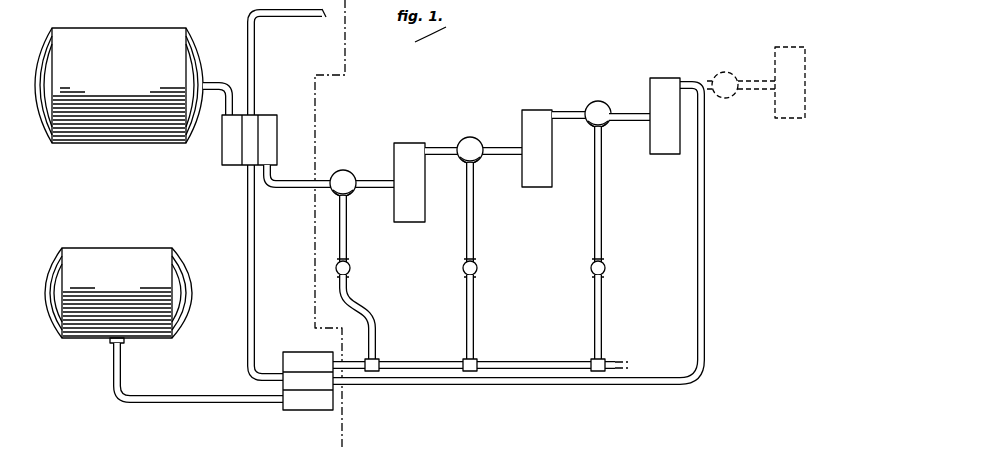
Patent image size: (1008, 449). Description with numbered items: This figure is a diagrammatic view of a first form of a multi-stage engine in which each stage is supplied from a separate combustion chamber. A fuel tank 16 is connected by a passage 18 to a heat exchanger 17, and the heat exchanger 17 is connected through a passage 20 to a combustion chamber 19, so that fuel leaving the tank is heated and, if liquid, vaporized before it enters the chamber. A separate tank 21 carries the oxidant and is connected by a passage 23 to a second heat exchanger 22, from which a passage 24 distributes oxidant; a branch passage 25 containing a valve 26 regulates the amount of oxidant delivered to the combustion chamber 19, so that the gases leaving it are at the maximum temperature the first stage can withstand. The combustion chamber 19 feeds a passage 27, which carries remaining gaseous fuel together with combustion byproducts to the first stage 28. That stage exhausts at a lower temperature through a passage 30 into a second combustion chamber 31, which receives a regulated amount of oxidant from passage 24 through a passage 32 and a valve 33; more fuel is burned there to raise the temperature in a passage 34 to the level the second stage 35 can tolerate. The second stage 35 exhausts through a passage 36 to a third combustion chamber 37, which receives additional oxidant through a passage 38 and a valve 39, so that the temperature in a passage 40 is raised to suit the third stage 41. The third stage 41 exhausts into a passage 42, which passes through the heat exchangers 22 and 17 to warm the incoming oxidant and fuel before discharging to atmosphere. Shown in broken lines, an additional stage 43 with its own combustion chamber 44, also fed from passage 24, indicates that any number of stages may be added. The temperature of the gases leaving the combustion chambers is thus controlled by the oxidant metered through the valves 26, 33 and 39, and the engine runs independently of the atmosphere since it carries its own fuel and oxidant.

The fuel tank 16 is at (106, 144).
The heat exchanger 17 is at (228, 165).
The passage 18 is at (224, 82).
The combustion chamber 19 is at (346, 170).
The passage 20 is at (292, 189).
The tank 21 is at (162, 248).
The heat exchanger 22 is at (300, 411).
The passage 23 is at (228, 406).
The passage 24 is at (418, 361).
The passage 25 is at (368, 311).
The valve 26 is at (352, 268).
The passage 27 is at (374, 188).
The first stage 28 is at (426, 210).
The passage 30 is at (438, 146).
The second combustion chamber 31 is at (478, 140).
The passage 32 is at (465, 250).
The valve 33 is at (478, 268).
The passage 34 is at (503, 157).
The second stage 35 is at (536, 111).
The passage 36 is at (571, 113).
The third combustion chamber 37 is at (601, 107).
The passage 38 is at (603, 207).
The valve 39 is at (606, 268).
The passage 40 is at (630, 122).
The third stage 41 is at (660, 79).
The passage 42 is at (289, 17).
The stage 43 is at (775, 52).
The combustion chamber 44 is at (729, 97).